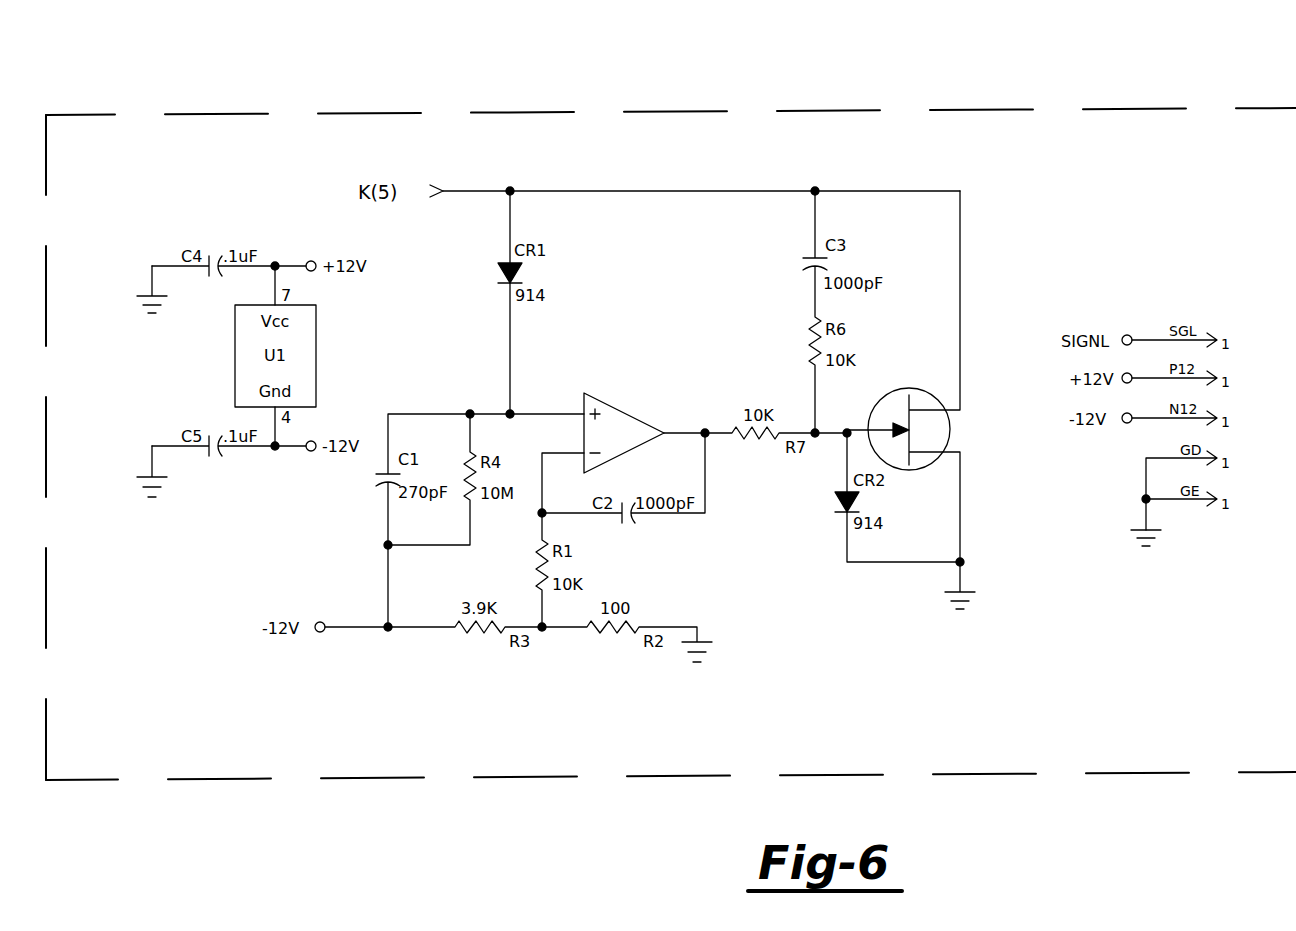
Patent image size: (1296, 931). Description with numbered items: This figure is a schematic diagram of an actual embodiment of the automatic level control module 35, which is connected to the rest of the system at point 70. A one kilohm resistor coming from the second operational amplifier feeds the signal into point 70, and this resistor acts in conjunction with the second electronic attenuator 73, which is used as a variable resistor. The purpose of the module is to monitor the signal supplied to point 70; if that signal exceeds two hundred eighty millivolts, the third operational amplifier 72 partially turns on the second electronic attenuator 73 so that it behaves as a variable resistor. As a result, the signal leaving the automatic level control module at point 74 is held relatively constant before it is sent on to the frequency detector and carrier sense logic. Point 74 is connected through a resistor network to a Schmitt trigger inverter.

The automatic level control module 35 is at (848, 110).
The point 70 is at (512, 188).
The third operational amplifier 72 is at (614, 405).
The second electronic attenuator 73 is at (906, 388).
The point 74 is at (964, 560).